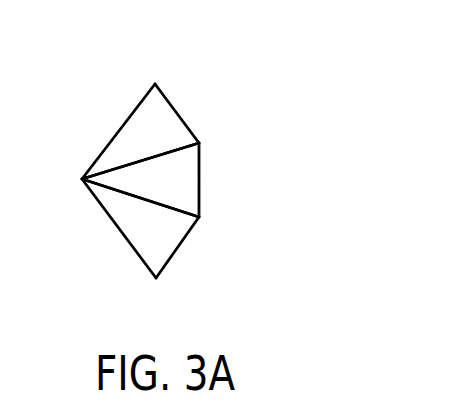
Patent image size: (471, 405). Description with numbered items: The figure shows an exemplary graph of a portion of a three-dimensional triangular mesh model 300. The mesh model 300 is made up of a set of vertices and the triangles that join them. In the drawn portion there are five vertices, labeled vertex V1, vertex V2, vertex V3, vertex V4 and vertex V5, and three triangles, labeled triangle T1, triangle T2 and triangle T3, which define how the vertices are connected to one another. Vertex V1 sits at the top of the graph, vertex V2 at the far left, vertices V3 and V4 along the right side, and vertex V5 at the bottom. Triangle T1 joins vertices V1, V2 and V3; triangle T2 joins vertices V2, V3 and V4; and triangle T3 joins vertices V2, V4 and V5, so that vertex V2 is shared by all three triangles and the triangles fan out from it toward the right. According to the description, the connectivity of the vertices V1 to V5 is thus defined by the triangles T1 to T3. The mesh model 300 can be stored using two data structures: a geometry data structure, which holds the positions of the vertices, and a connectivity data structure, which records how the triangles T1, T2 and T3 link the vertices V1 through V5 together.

The 3D triangular mesh model 300 is at (222, 169).
The vertex V1 is at (170, 73).
The vertex V2 is at (64, 182).
The vertex V3 is at (218, 143).
The vertex V4 is at (217, 223).
The vertex V5 is at (170, 295).
The triangle T1 is at (140, 131).
The triangle T2 is at (140, 180).
The triangle T3 is at (140, 228).